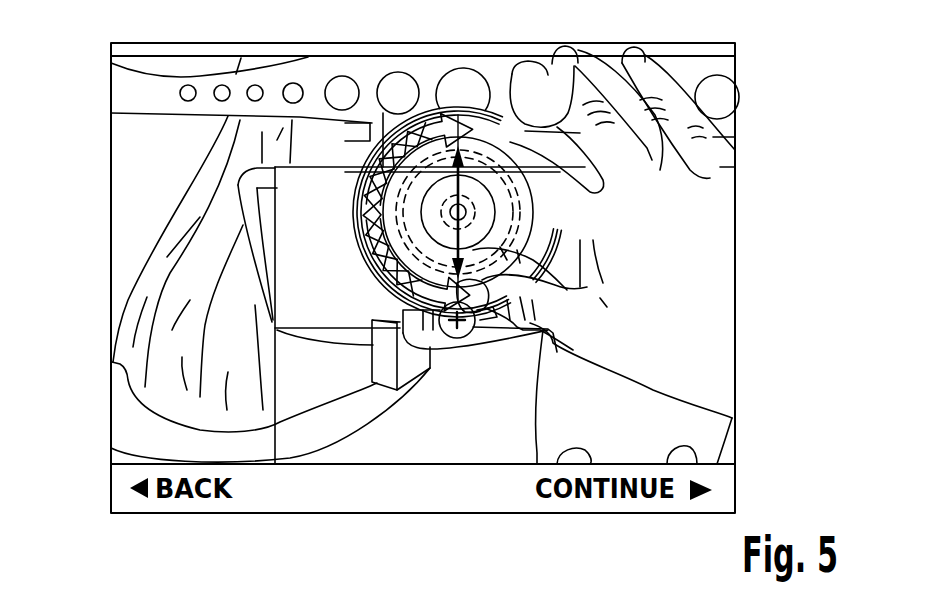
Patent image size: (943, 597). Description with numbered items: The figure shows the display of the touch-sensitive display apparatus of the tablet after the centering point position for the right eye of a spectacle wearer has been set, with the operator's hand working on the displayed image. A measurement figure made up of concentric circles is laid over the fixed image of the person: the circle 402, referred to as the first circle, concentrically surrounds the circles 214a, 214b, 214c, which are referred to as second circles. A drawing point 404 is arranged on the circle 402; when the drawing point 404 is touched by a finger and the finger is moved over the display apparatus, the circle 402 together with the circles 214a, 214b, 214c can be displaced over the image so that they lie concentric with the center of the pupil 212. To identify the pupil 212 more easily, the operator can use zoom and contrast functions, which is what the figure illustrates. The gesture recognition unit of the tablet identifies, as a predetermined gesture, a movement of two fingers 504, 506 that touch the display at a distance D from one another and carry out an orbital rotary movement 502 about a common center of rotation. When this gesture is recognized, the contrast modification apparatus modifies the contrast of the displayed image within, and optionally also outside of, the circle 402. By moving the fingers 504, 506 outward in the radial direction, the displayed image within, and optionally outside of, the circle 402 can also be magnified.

The circle 402 is at (356, 150).
The orbital rotary movement 502 is at (400, 140).
The circle 214a is at (428, 111).
The circle 214b is at (355, 205).
The circle 214c is at (355, 254).
The finger 504 is at (484, 145).
The pupil 212 is at (466, 212).
The distance D is at (493, 237).
The drawing point 404 is at (457, 338).
The finger 506 is at (480, 298).